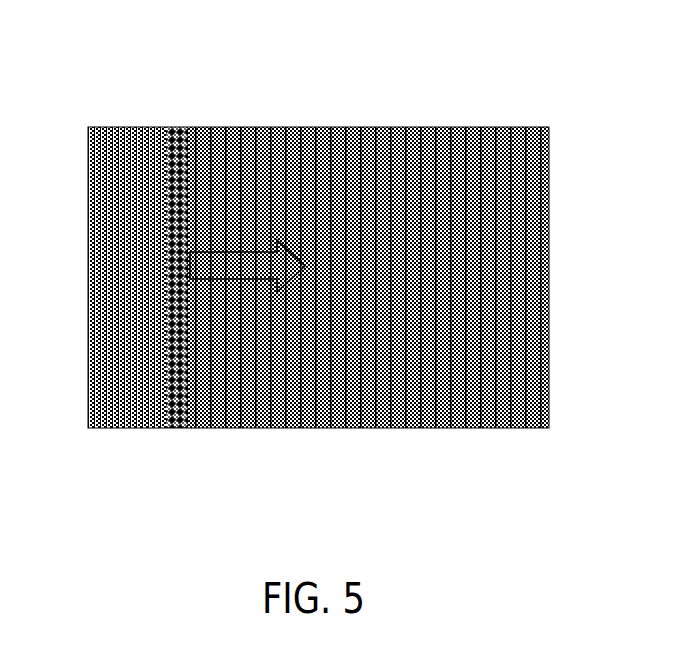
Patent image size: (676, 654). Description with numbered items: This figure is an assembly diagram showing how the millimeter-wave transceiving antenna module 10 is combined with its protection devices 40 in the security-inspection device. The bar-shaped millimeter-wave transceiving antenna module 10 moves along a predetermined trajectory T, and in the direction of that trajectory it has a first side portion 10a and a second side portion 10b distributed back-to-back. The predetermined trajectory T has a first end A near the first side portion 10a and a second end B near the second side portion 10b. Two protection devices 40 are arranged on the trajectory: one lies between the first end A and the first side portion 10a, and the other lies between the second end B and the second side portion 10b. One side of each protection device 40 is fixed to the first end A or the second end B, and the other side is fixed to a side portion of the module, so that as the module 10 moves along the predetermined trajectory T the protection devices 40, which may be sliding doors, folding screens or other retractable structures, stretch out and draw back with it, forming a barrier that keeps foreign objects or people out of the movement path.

The millimeter-wave transceiving antenna module 10 is at (236, 214).
The first side portion 10a is at (109, 243).
The second side portion 10b is at (368, 243).
The protection device 40 is at (344, 313).
The first end A is at (93, 432).
The predetermined trajectory T is at (319, 430).
The second end B is at (549, 432).